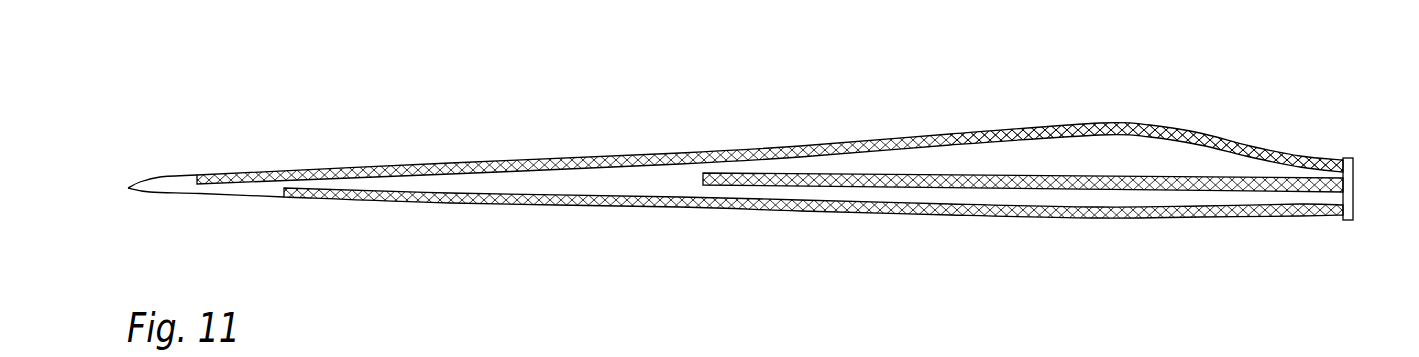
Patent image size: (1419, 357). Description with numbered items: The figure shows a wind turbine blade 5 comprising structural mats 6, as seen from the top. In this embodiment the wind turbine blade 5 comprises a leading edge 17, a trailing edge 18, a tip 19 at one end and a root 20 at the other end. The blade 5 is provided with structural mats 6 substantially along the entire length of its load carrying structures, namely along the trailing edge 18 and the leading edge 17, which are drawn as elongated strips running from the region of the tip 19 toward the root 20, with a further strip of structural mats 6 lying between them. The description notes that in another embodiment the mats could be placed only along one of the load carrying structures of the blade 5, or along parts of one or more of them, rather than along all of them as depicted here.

The wind turbine blade 5 is at (539, 114).
The structural mats 6 is at (748, 155).
The leading edge 17 is at (805, 210).
The trailing edge 18 is at (943, 135).
The tip 19 is at (167, 180).
The root 20 is at (1347, 182).